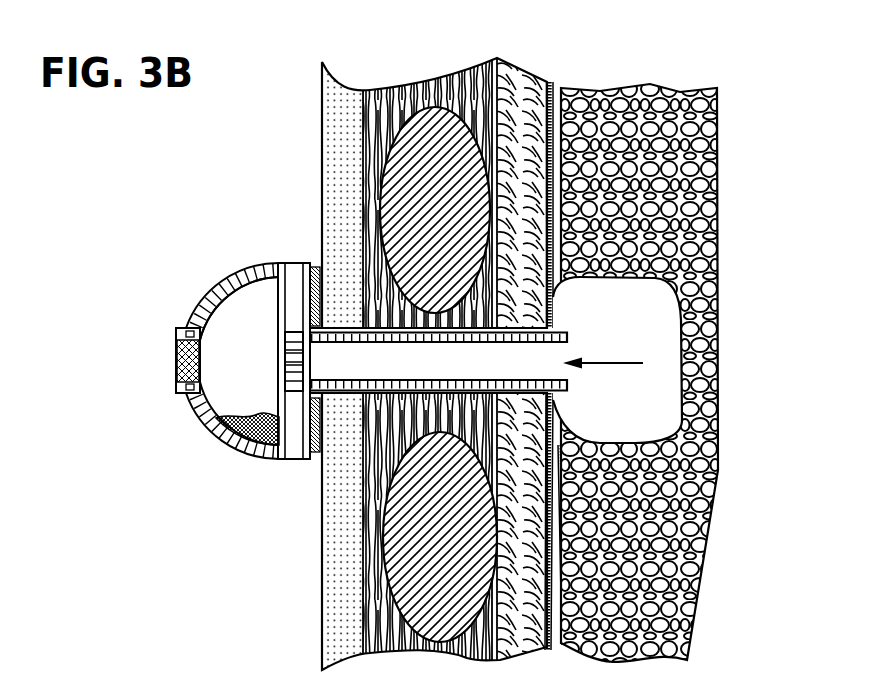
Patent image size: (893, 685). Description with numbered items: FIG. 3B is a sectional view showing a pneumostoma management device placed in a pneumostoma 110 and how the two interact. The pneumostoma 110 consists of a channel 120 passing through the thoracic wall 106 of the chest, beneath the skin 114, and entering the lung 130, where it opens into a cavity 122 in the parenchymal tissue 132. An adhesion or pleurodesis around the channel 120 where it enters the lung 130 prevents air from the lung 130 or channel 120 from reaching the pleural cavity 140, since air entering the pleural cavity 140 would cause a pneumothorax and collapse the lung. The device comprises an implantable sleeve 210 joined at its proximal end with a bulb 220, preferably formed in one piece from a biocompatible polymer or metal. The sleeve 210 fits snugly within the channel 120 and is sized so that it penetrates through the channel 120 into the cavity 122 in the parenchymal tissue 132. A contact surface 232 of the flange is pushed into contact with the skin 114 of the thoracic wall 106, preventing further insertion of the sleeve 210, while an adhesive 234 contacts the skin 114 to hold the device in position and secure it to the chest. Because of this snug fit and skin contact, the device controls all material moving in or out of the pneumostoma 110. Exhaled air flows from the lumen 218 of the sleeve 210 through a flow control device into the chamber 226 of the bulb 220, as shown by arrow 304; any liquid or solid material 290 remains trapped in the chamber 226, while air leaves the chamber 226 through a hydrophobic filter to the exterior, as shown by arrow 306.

The thoracic wall 106 is at (412, 90).
The pneumostoma 110 is at (655, 378).
The skin 114 is at (321, 123).
The channel 120 is at (350, 323).
The cavity 122 is at (598, 424).
The lung 130 is at (650, 337).
The parenchymal tissue 132 is at (628, 112).
The pleural cavity 140 is at (561, 66).
The implantable sleeve 210 is at (350, 396).
The lumen 218 is at (413, 373).
The bulb 220 is at (203, 423).
The chamber 226 is at (262, 330).
The contact surface 232 is at (302, 266).
The adhesive 234 is at (308, 298).
The liquid and/or solid material 290 is at (253, 438).
The arrow 304 is at (226, 371).
The arrow 306 is at (112, 363).